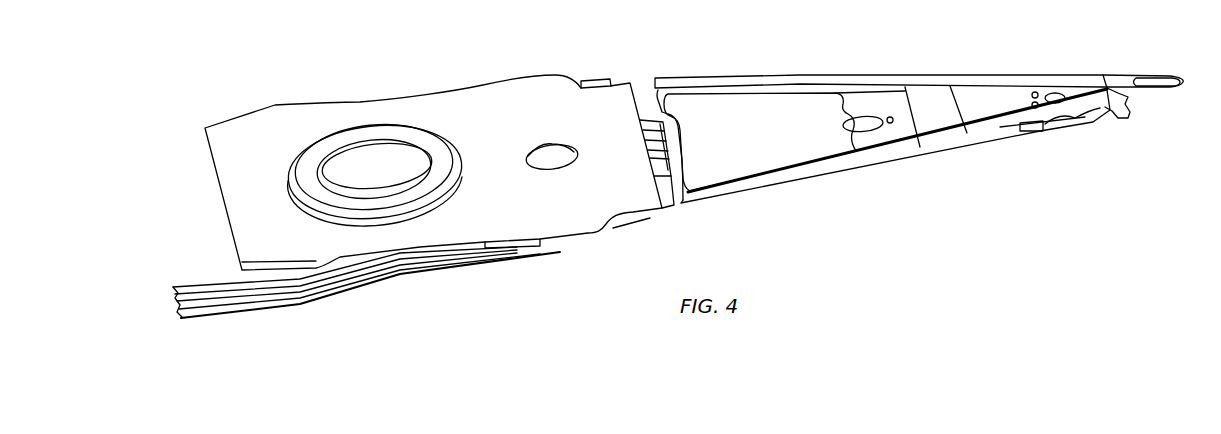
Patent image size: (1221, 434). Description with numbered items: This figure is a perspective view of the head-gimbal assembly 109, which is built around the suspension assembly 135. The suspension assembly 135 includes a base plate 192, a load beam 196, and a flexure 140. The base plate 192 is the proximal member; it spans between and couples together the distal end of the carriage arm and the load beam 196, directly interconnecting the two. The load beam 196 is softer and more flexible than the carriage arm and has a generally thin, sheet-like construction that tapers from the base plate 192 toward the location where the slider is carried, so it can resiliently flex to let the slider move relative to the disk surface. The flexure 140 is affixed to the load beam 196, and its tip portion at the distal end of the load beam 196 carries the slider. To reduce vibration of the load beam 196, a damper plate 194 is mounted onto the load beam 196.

The head suspension assembly 109 is at (1103, 48).
The suspension assembly 135 is at (709, 70).
The flexure 140 is at (217, 287).
The base plate 192 is at (486, 125).
The damper plate 194 is at (772, 103).
The load beam 196 is at (875, 98).